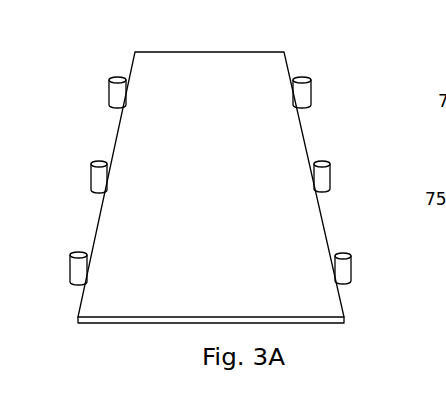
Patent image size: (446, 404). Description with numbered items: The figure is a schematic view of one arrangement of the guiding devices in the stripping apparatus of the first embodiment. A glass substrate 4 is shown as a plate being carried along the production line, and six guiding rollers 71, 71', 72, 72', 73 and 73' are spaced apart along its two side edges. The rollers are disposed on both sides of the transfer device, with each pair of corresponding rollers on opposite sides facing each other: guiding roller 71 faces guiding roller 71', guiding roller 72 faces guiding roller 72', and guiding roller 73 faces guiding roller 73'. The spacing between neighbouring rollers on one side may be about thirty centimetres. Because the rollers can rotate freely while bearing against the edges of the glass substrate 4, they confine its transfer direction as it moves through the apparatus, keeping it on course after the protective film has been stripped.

The glass substrate 4 is at (225, 52).
The guiding roller 71 is at (327, 90).
The guiding roller 72 is at (347, 175).
The guiding roller 73 is at (367, 268).
The guiding roller 71' is at (86, 92).
The guiding roller 72' is at (70, 177).
The guiding roller 73' is at (49, 268).